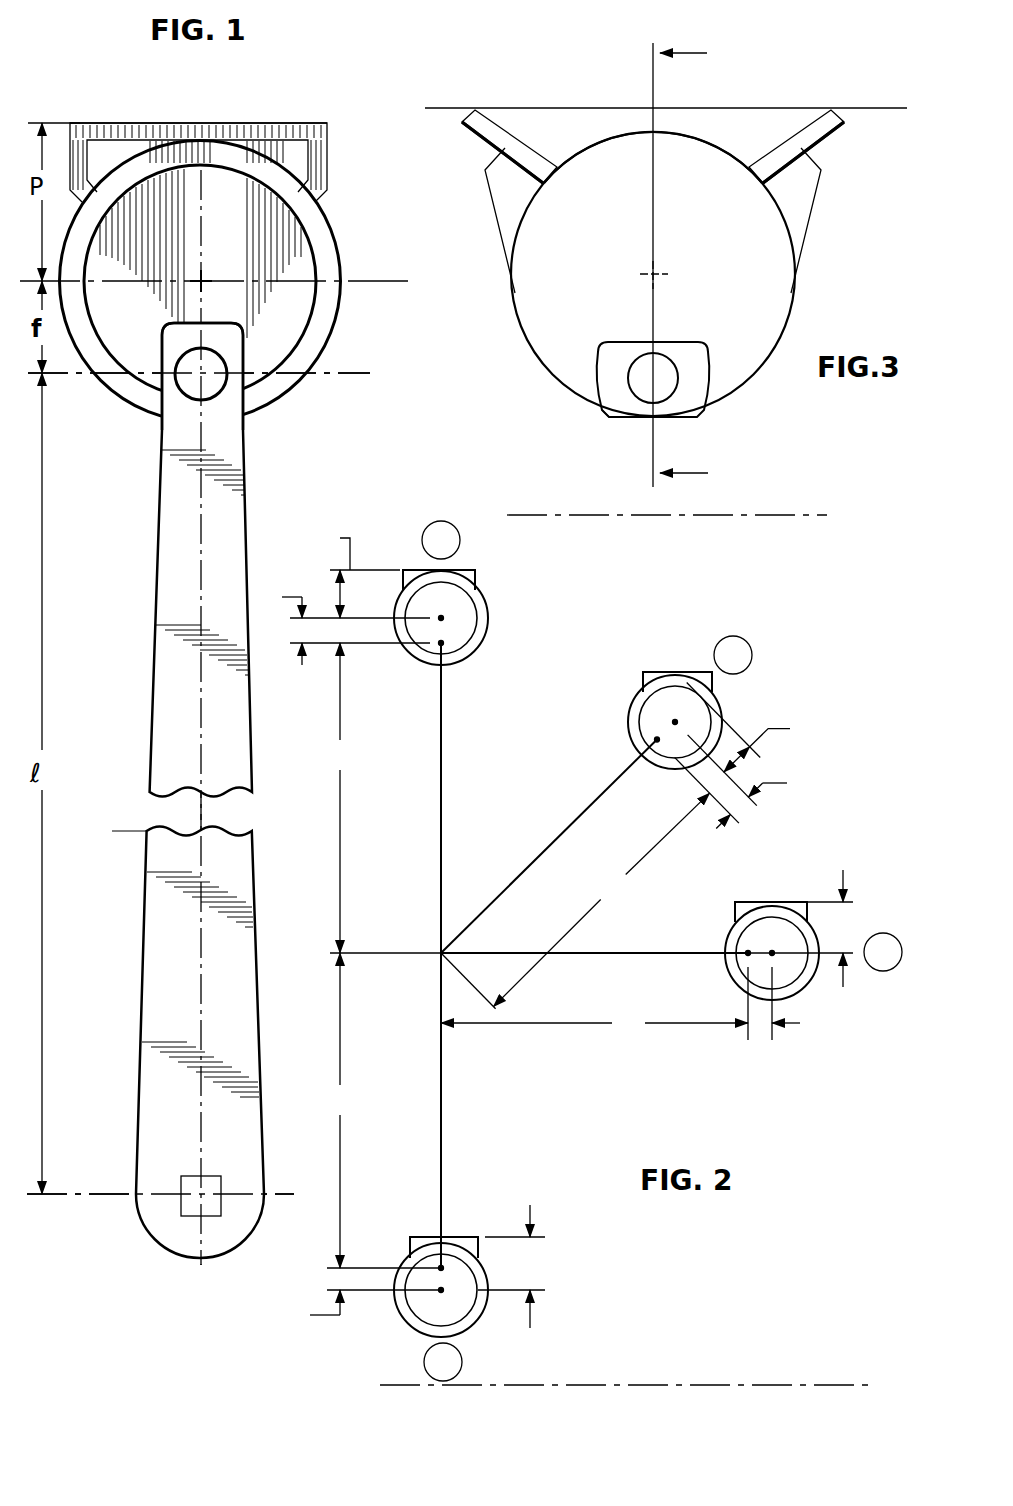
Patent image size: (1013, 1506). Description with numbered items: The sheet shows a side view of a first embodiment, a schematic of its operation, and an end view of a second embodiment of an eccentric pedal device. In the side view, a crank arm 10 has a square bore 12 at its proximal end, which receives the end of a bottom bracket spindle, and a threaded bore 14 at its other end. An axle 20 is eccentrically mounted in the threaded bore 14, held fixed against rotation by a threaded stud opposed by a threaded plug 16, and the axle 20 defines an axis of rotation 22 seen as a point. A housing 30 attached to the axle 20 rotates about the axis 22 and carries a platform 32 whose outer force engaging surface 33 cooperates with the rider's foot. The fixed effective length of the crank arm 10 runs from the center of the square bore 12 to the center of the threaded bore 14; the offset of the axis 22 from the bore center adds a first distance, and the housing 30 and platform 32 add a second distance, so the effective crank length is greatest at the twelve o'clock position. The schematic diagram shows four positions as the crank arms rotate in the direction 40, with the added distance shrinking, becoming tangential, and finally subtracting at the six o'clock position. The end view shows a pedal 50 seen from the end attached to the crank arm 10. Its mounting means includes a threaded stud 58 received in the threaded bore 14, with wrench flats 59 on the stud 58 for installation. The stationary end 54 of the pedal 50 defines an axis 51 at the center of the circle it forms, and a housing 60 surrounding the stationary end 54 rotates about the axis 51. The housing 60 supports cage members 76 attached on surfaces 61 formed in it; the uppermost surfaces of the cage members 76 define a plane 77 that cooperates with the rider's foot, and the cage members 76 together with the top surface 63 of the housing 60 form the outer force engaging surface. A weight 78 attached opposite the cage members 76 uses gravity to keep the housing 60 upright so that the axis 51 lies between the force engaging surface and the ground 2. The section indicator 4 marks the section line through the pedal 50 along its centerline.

In FIG. 1, the crank arm 10 is at (258, 520).
In FIG. 1, the square bore 12 is at (200, 1178).
In FIG. 1, the threaded bore 14 is at (165, 349).
In FIG. 1, the threaded plug 16 is at (208, 370).
In FIG. 1, the axle 20 is at (315, 272).
In FIG. 1, the axis of rotation 22 is at (205, 279).
In FIG. 1, the housing 30 is at (253, 142).
In FIG. 1, the platform 32 is at (329, 165).
In FIG. 1, the outer force engaging surface 33 is at (135, 123).
In FIG. 3, the pedal 50 is at (560, 66).
In FIG. 3, the axis 51 is at (655, 272).
In FIG. 3, the stationary end 54 is at (552, 300).
In FIG. 3, the threaded stud 58 is at (663, 387).
In FIG. 3, the wrench flats 59 is at (690, 357).
In FIG. 3, the housing 60 is at (818, 198).
In FIG. 3, the surfaces 61 is at (500, 150).
In FIG. 3, the top surface 63 is at (697, 135).
In FIG. 3, the cage members 76 is at (543, 163).
In FIG. 3, the plane 77 is at (880, 108).
In FIG. 3, the weight 78 is at (600, 408).
In FIG. 2, the direction 40 is at (550, 802).
In FIG. 3, the section line 4- 4 is at (696, 266).
In FIG. 3, the ground 2 is at (768, 518).
In FIG. 2, the ground 2 is at (672, 1385).